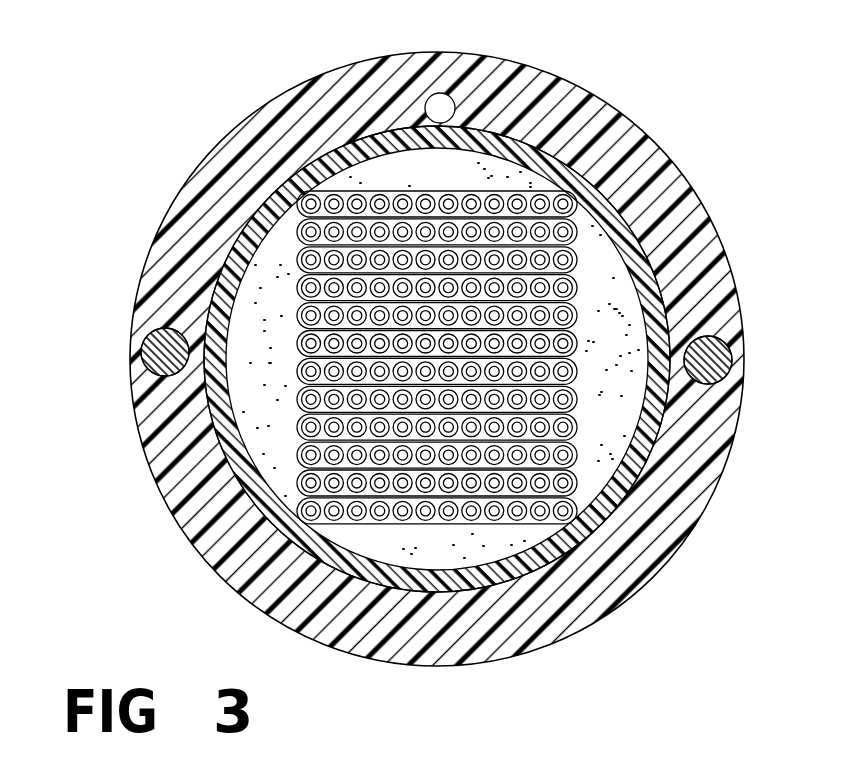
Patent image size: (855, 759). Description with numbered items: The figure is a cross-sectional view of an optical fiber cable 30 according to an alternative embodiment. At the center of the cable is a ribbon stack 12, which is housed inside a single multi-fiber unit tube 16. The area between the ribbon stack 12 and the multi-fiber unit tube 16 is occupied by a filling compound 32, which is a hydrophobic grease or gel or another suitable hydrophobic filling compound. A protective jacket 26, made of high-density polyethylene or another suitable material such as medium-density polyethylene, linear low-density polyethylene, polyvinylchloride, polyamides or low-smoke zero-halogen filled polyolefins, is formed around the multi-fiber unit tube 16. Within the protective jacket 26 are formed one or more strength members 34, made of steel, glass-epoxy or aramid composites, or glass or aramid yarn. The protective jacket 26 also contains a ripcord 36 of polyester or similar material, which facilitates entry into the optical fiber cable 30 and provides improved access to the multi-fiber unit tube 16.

The optical fiber cable 30 is at (112, 122).
The protective jacket 26 is at (270, 120).
The ripcord 36 is at (445, 96).
The strength members 34 is at (142, 346).
The filling compound 32 is at (518, 173).
The multi-fiber unit tube 16 is at (218, 275).
The ribbon stack 12 is at (580, 292).